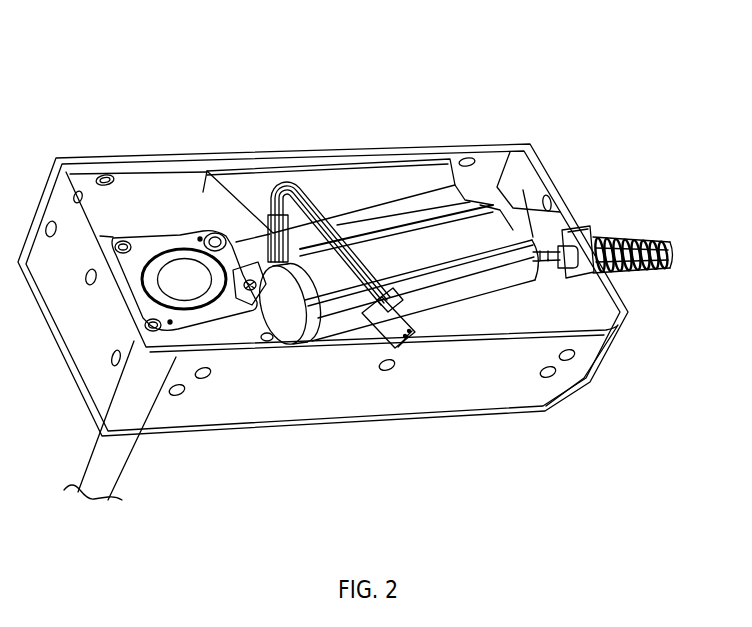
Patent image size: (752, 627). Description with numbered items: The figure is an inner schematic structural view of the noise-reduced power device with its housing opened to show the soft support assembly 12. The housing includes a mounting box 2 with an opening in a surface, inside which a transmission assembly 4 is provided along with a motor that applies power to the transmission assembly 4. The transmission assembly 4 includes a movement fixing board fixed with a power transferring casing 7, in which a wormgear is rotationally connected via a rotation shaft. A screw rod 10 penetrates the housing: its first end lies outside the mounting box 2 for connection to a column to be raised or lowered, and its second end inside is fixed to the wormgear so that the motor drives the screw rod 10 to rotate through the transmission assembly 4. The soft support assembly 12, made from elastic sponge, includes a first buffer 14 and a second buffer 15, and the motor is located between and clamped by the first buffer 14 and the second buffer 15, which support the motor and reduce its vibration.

The mounting box 2 is at (475, 387).
The transmission assembly 4 is at (172, 222).
The power transferring casing 7 is at (150, 243).
The screw rod 10 is at (110, 457).
The soft support assembly 12 is at (508, 60).
The first buffer 14 is at (474, 302).
The second buffer 15 is at (352, 185).